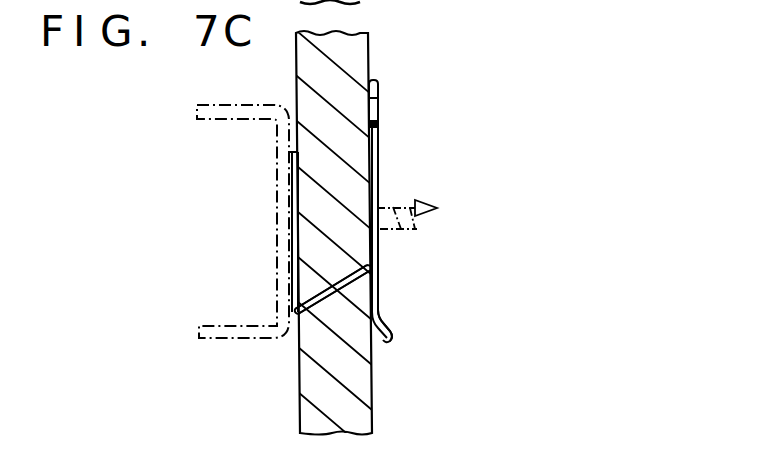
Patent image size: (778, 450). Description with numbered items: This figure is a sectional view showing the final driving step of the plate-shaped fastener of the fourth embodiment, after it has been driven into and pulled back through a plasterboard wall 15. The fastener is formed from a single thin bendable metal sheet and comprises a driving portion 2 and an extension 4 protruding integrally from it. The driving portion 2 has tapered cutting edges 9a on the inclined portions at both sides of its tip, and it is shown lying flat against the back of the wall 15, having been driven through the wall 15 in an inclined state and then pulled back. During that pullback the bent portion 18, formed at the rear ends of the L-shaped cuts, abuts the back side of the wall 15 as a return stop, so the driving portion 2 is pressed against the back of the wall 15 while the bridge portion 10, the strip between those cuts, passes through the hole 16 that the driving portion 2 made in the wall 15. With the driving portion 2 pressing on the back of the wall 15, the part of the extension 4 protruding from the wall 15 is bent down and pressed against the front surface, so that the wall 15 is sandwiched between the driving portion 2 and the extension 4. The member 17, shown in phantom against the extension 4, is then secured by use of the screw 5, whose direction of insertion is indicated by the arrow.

The plasterboard wall 15 is at (355, 57).
The member 17 is at (215, 345).
The extension 4 is at (298, 191).
The hole 16 is at (318, 302).
The bridge portion 10 is at (352, 283).
The tapered cutting edges 9a is at (378, 145).
The driving portion 2 is at (377, 245).
The bent portion 18 is at (390, 342).
The screw 5 is at (393, 207).